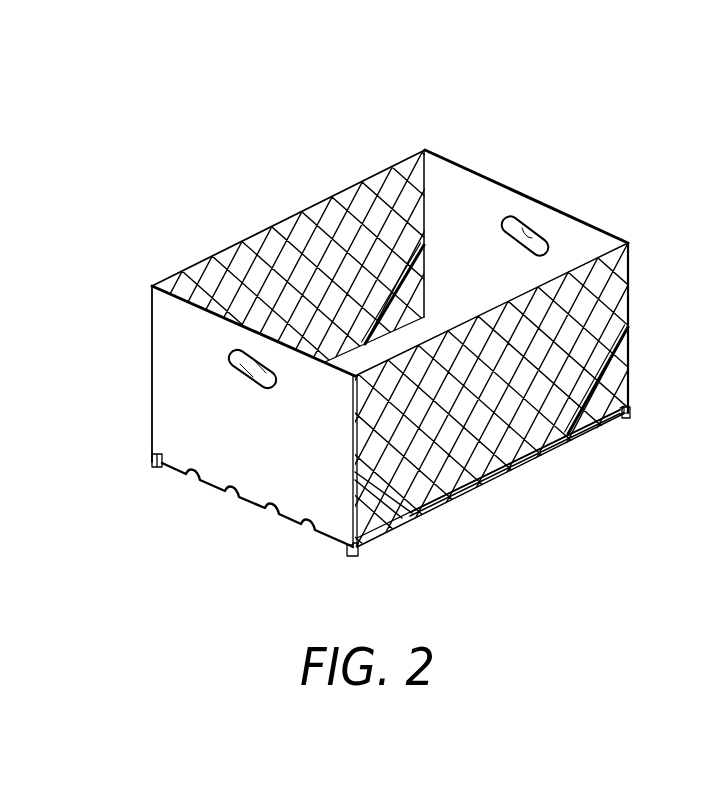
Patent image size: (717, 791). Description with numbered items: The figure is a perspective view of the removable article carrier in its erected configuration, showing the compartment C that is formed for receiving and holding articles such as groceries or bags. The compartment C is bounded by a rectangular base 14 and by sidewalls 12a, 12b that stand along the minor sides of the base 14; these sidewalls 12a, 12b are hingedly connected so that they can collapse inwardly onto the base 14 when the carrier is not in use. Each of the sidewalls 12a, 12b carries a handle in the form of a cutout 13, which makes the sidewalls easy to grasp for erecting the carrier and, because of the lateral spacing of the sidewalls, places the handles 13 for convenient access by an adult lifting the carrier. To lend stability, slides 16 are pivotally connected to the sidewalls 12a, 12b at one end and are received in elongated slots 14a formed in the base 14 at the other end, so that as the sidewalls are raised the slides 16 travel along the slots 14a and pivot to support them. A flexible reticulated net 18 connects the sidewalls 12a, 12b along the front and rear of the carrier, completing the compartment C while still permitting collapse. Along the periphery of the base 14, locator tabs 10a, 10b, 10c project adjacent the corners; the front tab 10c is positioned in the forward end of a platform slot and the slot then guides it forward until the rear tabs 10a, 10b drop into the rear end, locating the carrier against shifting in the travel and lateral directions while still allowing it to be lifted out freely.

The compartment C is at (296, 175).
The net 18 is at (348, 190).
The sidewall 12b is at (462, 175).
The cutouts 13 is at (232, 362).
The sidewall 12a is at (165, 418).
The slides 16 is at (424, 317).
The base 14 is at (592, 434).
The elongated slots 14a is at (490, 478).
The tab 10a is at (628, 416).
The tab 10b is at (365, 556).
The tab 10c is at (153, 468).